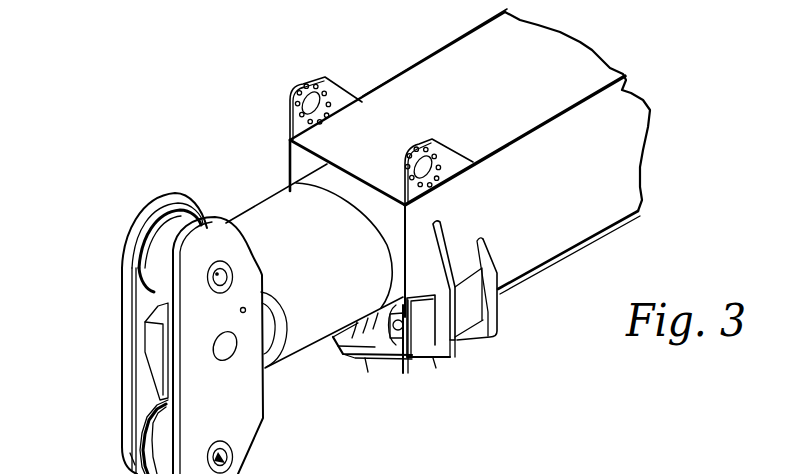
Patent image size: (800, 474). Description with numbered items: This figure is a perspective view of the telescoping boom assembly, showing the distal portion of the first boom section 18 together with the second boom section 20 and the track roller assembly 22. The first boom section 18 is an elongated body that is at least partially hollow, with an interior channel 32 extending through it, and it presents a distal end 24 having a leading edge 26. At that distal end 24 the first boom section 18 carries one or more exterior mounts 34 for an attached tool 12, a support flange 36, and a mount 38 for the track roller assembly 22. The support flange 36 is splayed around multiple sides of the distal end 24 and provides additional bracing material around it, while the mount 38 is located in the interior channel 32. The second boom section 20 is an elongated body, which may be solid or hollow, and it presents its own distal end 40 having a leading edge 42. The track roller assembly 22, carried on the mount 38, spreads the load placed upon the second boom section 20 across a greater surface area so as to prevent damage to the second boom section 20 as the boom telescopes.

The attached tool 12 is at (105, 220).
The first boom section 18 is at (623, 170).
The second boom section 20 is at (306, 337).
The track roller assembly 22 is at (390, 395).
The distal end 24 is at (557, 357).
The leading edge 26 is at (362, 358).
The interior channel 32 is at (278, 153).
The exterior mounts 34 is at (318, 77).
The support flange 36 is at (440, 358).
The mount for the track roller assembly 38 is at (400, 358).
The distal end 40 is at (205, 197).
The leading edge 42 is at (270, 368).